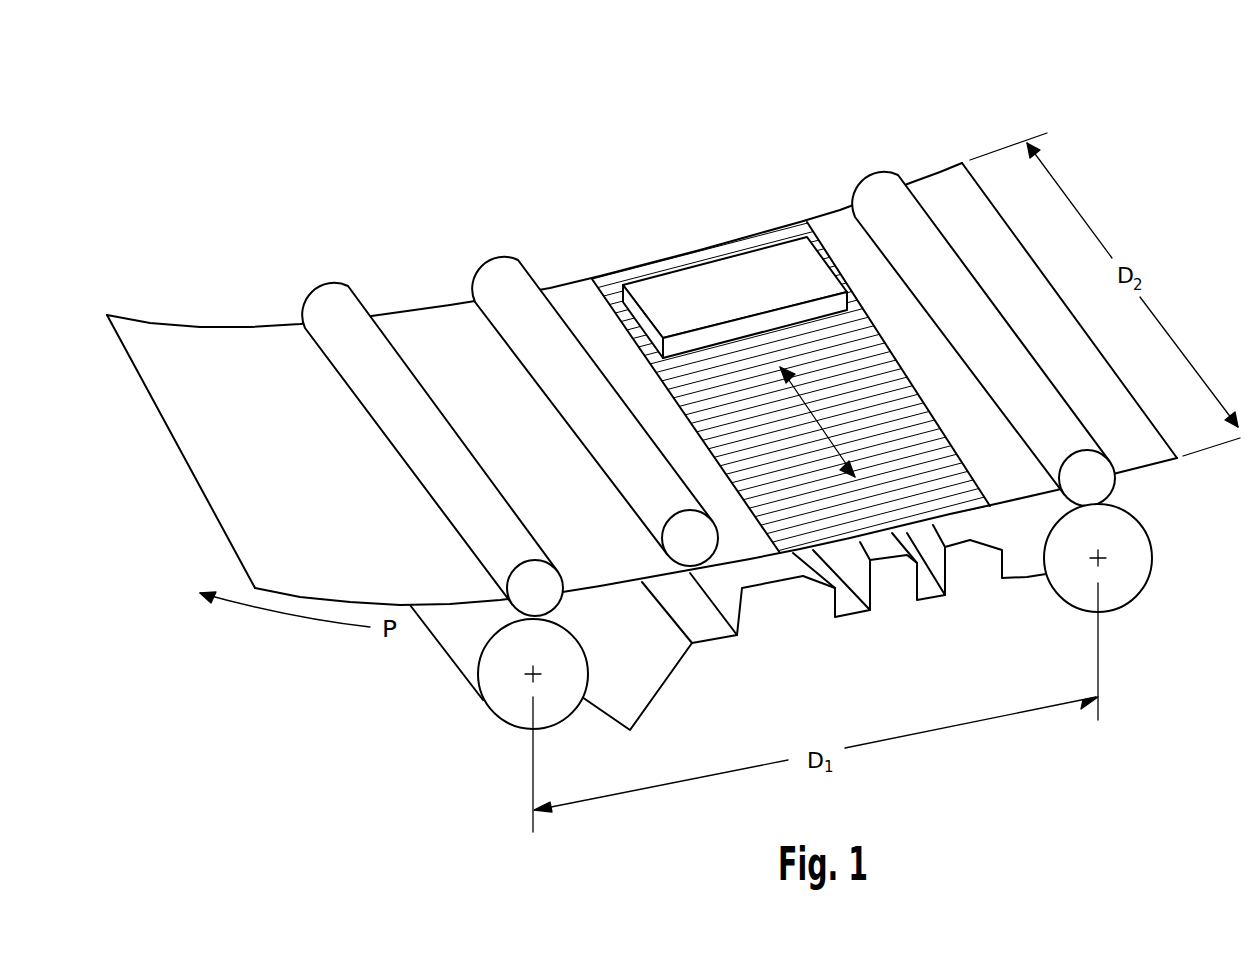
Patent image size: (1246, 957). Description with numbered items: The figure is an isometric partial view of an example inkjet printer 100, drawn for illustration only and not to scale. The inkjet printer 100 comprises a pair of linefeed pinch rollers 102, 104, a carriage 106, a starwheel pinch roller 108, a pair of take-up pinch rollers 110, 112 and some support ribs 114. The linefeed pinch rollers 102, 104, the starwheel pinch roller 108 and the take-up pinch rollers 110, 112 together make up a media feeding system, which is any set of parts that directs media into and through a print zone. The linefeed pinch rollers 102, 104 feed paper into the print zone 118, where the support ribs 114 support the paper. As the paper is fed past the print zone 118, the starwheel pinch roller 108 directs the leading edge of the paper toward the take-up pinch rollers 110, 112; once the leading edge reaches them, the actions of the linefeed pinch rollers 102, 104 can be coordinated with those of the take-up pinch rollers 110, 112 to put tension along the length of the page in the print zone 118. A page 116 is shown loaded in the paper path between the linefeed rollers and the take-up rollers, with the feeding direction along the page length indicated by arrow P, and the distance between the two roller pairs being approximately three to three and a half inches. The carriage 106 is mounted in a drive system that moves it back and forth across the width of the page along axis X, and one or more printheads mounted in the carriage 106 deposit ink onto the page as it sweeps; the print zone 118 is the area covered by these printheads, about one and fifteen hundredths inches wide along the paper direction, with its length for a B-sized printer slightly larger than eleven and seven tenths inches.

The inkjet printer 100 is at (343, 132).
The linefeed pinch roller 102 is at (1143, 567).
The linefeed pinch roller 104 is at (853, 177).
The carriage 106 is at (749, 303).
The starwheel pinch roller 108 is at (490, 260).
The take-up pinch roller 110 is at (316, 286).
The take-up pinch roller 112 is at (500, 708).
The support ribs 114 is at (1013, 567).
The page 116 is at (338, 500).
The print zone 118 is at (822, 533).